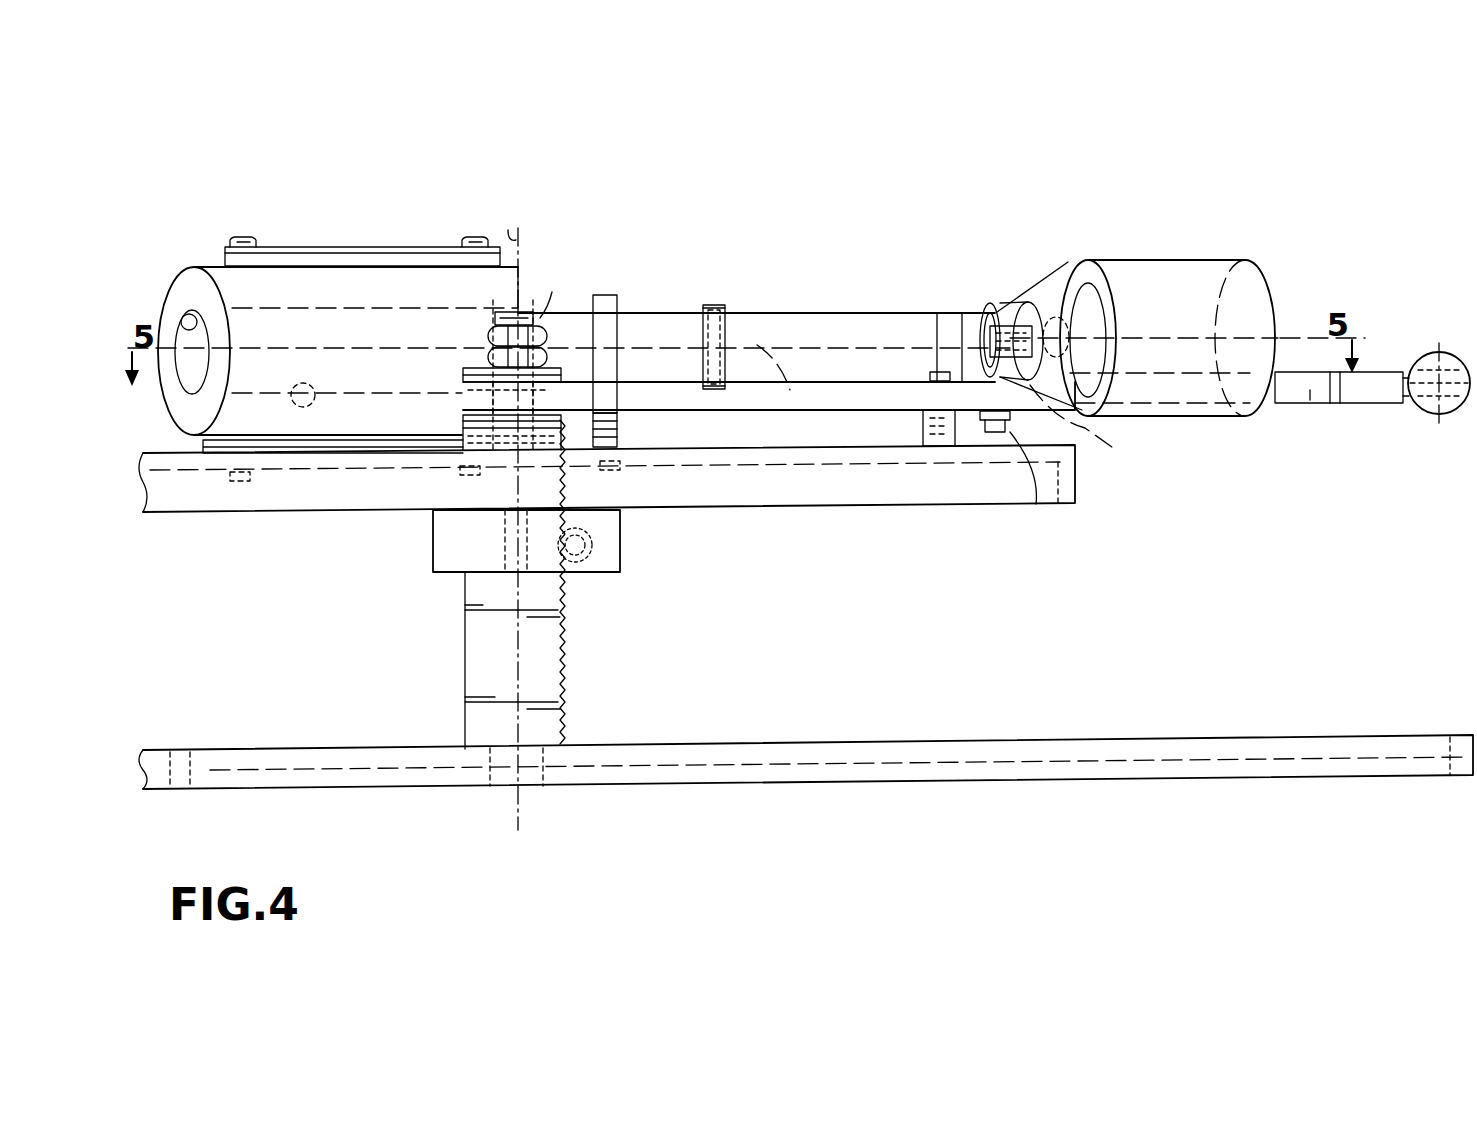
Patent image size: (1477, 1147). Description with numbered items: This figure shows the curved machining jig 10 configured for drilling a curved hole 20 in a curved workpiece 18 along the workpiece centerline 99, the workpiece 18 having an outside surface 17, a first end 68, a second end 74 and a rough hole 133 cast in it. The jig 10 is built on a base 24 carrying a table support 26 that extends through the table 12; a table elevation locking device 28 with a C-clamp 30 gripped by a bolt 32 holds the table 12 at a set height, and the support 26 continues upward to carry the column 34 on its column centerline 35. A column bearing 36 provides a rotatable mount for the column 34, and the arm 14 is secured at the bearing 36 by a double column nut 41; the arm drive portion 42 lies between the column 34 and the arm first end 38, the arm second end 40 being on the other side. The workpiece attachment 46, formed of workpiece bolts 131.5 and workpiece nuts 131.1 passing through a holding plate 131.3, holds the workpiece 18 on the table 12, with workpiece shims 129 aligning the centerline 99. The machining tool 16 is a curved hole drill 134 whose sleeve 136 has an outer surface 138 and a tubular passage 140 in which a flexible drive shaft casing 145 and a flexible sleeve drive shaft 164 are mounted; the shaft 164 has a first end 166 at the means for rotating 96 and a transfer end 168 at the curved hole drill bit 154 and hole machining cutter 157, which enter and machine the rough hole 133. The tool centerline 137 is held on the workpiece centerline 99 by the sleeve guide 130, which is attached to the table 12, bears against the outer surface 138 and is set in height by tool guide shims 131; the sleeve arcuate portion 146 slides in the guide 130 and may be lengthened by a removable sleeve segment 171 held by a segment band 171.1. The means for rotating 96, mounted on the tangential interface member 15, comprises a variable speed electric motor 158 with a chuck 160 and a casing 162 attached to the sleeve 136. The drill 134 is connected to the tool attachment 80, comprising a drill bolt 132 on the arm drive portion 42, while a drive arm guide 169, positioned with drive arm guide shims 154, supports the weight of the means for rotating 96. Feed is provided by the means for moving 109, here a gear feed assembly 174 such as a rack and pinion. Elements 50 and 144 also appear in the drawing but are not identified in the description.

The curved machining jig 10 is at (745, 578).
The table 12 is at (1075, 490).
The arm 14 is at (852, 382).
The tangential interface member 15 is at (948, 320).
The machining tool 16 is at (682, 290).
The outside surface 17 is at (218, 268).
The curved workpiece 18 is at (398, 284).
The curved hole 20 is at (248, 320).
The base 24 is at (832, 752).
The table support 26 is at (472, 655).
The table elevation locking device 28 is at (447, 560).
The C-clamp 30 is at (615, 532).
The bolt 32 is at (588, 556).
The column 34 is at (512, 310).
The column centerline 35 is at (508, 230).
The column bearing 36 is at (463, 374).
The arm first end 38 is at (1312, 395).
The arm second end 40 is at (463, 398).
The double column nut 41 is at (497, 335).
The arm drive portion 42 is at (880, 403).
The workpiece attachment 46 is at (338, 226).
The nut 50 is at (1010, 413).
The curved workpiece first end 68 is at (507, 312).
The curved workpiece second end 74 is at (189, 292).
The tool attachment 80 is at (605, 278).
The means for rotating 96 is at (1160, 260).
The workpiece centerline 99 is at (352, 350).
The means for moving 109 is at (1425, 410).
The workpiece shims 129 is at (232, 445).
The sleeve guide 130 is at (607, 305).
The tool guide shims 131 is at (620, 440).
The workpiece nuts 131.1 is at (254, 482).
The holding plate 131.3 is at (278, 252).
The workpiece bolts 131.5 is at (254, 238).
The drill bolt 132 is at (1036, 504).
The rough hole 133 is at (185, 318).
The curved hole drill 134 is at (918, 292).
The sleeve 136 is at (738, 312).
The tool centerline 137 is at (685, 345).
The outer surface 138 is at (960, 320).
The tubular passage 140 is at (988, 318).
The flange 144 is at (940, 320).
The flexible drive shaft casing 145 is at (975, 358).
The sleeve arcuate portion 146 is at (990, 320).
The curved hole drill bit 154 is at (470, 343).
The hole machining cutter 157 is at (562, 286).
The variable speed electric motor 158 is at (1226, 262).
The chuck 160 is at (1052, 272).
The casing 162 is at (1232, 417).
The flexible sleeve drive shaft 164 is at (1097, 428).
The first end 166 is at (1040, 348).
The transfer end 168 is at (798, 377).
The drive arm guide 169 is at (940, 372).
The removable sleeve segment 171 is at (714, 390).
The segment band 171.1 is at (714, 295).
The gear feed assembly 174 is at (1432, 410).